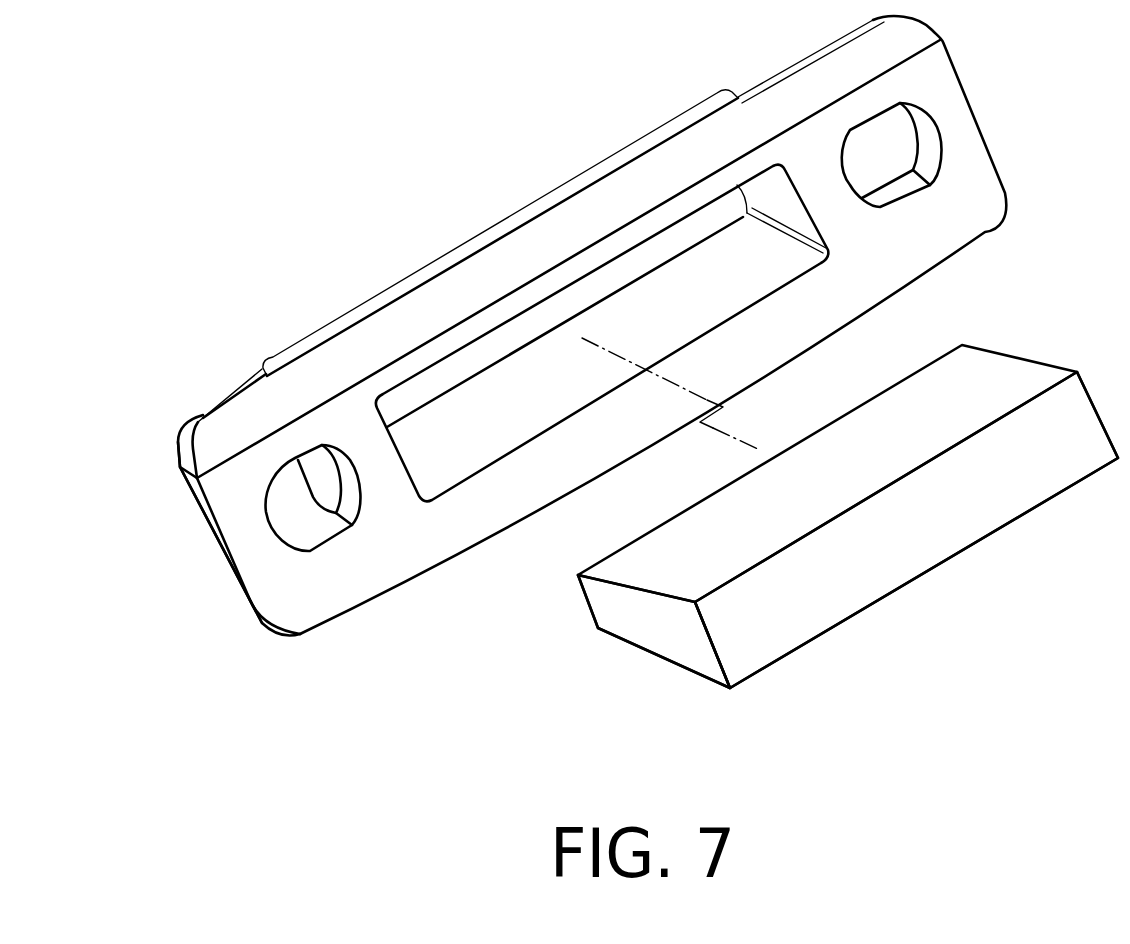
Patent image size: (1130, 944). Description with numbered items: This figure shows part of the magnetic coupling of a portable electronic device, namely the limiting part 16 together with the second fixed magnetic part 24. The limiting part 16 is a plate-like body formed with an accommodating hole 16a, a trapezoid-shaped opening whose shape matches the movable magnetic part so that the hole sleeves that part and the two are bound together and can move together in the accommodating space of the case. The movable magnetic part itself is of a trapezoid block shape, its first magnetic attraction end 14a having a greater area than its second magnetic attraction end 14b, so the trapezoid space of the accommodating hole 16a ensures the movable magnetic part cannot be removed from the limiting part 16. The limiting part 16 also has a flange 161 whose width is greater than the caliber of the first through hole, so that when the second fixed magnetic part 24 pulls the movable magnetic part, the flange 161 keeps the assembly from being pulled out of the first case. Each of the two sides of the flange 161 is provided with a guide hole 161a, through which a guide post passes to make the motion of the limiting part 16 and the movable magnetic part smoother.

The limiting part 16 is at (578, 325).
The accommodating hole 16a is at (540, 410).
The flange 161 is at (207, 446).
The guide hole 161a is at (308, 502).
The second fixed magnetic part 24 is at (897, 540).
The first magnetic attraction end 14a is at (770, 627).
The second magnetic attraction end 14b is at (580, 599).